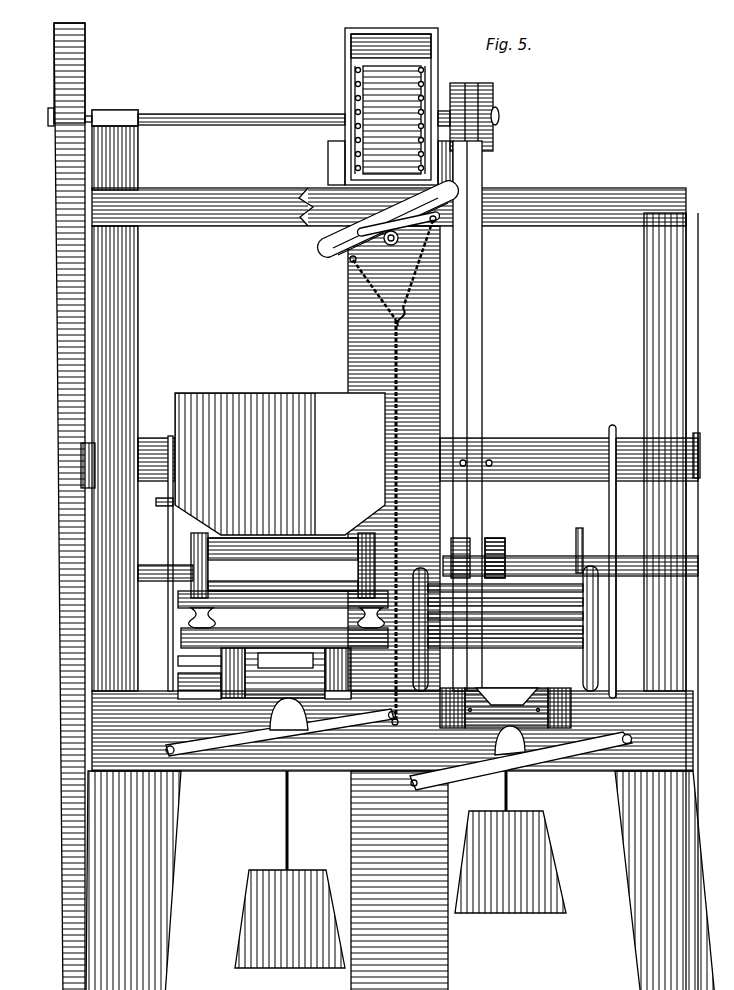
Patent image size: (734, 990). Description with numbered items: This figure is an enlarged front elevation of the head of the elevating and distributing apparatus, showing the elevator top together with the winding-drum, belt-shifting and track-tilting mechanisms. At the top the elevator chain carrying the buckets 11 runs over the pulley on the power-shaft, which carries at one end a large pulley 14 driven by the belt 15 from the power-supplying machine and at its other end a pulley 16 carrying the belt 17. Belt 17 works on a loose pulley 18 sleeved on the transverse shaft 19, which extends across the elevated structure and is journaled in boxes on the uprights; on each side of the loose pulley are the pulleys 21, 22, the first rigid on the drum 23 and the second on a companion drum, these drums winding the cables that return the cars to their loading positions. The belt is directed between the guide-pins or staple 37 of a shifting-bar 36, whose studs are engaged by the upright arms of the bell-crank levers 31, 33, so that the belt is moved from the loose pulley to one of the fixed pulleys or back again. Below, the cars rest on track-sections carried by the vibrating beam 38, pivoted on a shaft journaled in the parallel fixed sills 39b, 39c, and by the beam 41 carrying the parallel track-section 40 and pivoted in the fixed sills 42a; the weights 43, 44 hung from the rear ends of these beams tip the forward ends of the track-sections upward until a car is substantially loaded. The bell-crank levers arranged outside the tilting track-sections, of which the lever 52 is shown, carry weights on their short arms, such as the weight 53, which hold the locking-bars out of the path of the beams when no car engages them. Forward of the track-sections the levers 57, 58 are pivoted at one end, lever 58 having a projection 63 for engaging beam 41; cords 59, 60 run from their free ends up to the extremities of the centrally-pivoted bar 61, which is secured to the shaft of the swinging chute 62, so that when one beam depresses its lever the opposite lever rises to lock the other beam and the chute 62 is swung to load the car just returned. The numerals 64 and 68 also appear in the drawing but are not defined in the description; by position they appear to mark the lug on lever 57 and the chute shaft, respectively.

The buckets 11 is at (280, 465).
The large pulley 14 is at (78, 30).
The belt 15 is at (52, 266).
The pulley 16 is at (487, 93).
The belt 17 is at (474, 335).
The loose pulley 18 is at (222, 107).
The transverse shaft 19 is at (150, 560).
The pulley 21 is at (495, 535).
The pulley 22 is at (452, 530).
The drum 23 is at (528, 550).
The bell-crank lever 31 is at (600, 486).
The bell-crank lever 33 is at (168, 612).
The shifting-bar 36 is at (519, 433).
The guide-pins or staple 37 is at (483, 456).
The vibrating beam 38 is at (505, 647).
The guide block 39b is at (454, 708).
The guide block 39c is at (561, 708).
The track-section 40 is at (283, 565).
The beam 41 is at (264, 673).
The fixed sills 42a is at (264, 702).
The weight 43 is at (510, 842).
The weight 44 is at (290, 869).
The bell-crank lever 52 is at (609, 507).
The weight 53 is at (160, 516).
The lever 57 is at (535, 752).
The lever 58 is at (280, 739).
The cord 59 is at (395, 729).
The cord 60 is at (386, 666).
The centrally-pivoted bar 61 is at (428, 209).
The swinging chute 62 is at (388, 219).
The projection 63 is at (289, 714).
The lever 64 is at (521, 758).
The chain 68 is at (428, 250).